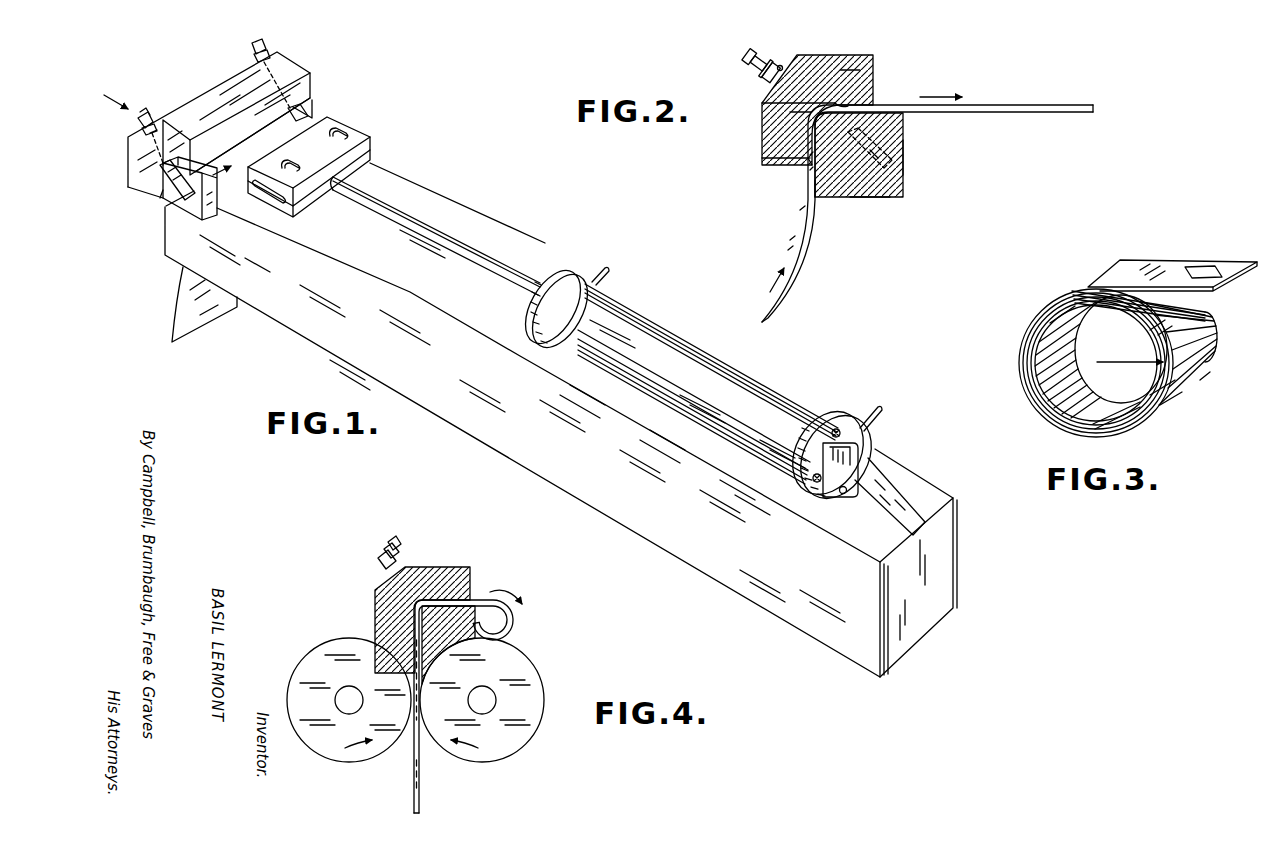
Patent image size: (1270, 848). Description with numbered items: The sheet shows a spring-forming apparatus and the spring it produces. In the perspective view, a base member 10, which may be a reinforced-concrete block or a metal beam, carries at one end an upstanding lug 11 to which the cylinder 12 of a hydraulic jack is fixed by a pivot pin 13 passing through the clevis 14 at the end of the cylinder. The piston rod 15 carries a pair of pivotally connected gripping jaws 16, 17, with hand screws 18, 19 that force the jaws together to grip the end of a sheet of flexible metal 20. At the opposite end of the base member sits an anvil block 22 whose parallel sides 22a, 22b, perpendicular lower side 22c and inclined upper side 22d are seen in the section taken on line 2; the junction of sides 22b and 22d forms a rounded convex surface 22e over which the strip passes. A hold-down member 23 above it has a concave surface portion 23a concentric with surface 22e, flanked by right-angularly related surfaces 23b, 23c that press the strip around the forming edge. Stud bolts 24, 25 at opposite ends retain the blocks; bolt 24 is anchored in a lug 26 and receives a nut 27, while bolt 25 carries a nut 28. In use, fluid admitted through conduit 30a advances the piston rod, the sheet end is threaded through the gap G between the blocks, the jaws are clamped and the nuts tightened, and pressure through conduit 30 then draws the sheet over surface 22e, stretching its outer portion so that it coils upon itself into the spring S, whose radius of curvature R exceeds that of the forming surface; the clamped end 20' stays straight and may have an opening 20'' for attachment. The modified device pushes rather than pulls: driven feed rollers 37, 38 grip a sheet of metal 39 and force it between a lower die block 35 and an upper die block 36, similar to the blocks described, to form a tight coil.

In FIG. 1, the section line 2 is at (162, 145).
In FIG. 1, the base member 10 is at (482, 440).
In FIG. 1, the upstanding lug 11 is at (892, 498).
In FIG. 1, the cylinder 12 is at (773, 395).
In FIG. 1, the pivot pin 13 is at (843, 494).
In FIG. 1, the clevis 14 is at (858, 452).
In FIG. 1, the piston rod 15 is at (438, 248).
In FIG. 1, the gripping jaw 16 is at (368, 133).
In FIG. 1, the gripping jaw 17 is at (368, 161).
In FIG. 1, the hand screw 18 is at (339, 130).
In FIG. 1, the hand screw 19 is at (292, 166).
In FIG. 1, the sheet of flexible metal 20 is at (240, 213).
In FIG. 2, the sheet of flexible metal 20 is at (927, 199).
In FIG. 3, the end of the strip 20' is at (1172, 261).
In FIG. 3, the opening 20'' is at (1199, 255).
In FIG. 1, the anvil block 22 is at (217, 213).
In FIG. 2, the anvil block 22 is at (903, 184).
In FIG. 2, the side of die block 22a is at (903, 157).
In FIG. 2, the side of die block 22b is at (815, 188).
In FIG. 2, the lower side of die block 22c is at (868, 198).
In FIG. 2, the upper side of die block 22d is at (842, 115).
In FIG. 2, the rounded convex surface 22e is at (790, 118).
In FIG. 1, the hold-down member 23 is at (128, 164).
In FIG. 2, the hold-down member 23 is at (762, 144).
In FIG. 2, the concave surface portion 23a is at (830, 100).
In FIG. 2, the right angularly related surface 23b is at (810, 162).
In FIG. 2, the right angularly related surface 23c is at (878, 103).
In FIG. 1, the stud bolt 24 is at (140, 125).
In FIG. 1, the stud bolt 25 is at (255, 48).
In FIG. 2, the stud bolt 25 is at (762, 57).
In FIG. 1, the lug 26 is at (165, 203).
In FIG. 2, the lug 26 is at (844, 198).
In FIG. 1, the nut 27 is at (150, 118).
In FIG. 1, the nut 28 is at (270, 58).
In FIG. 2, the nut 28 is at (783, 65).
In FIG. 1, the conduit 30 is at (606, 268).
In FIG. 1, the conduit 30a is at (871, 402).
In FIG. 4, the lower die block 35 is at (466, 610).
In FIG. 4, the die block 36 is at (441, 568).
In FIG. 4, the feed roller 37 is at (534, 672).
In FIG. 4, the feed roller 38 is at (312, 656).
In FIG. 4, the sheet of metal 39 is at (414, 787).
In FIG. 1, the gap G is at (162, 198).
In FIG. 2, the gap G is at (762, 160).
In FIG. 3, the spring S is at (1019, 355).
In FIG. 3, the radius of curvature R is at (1130, 363).